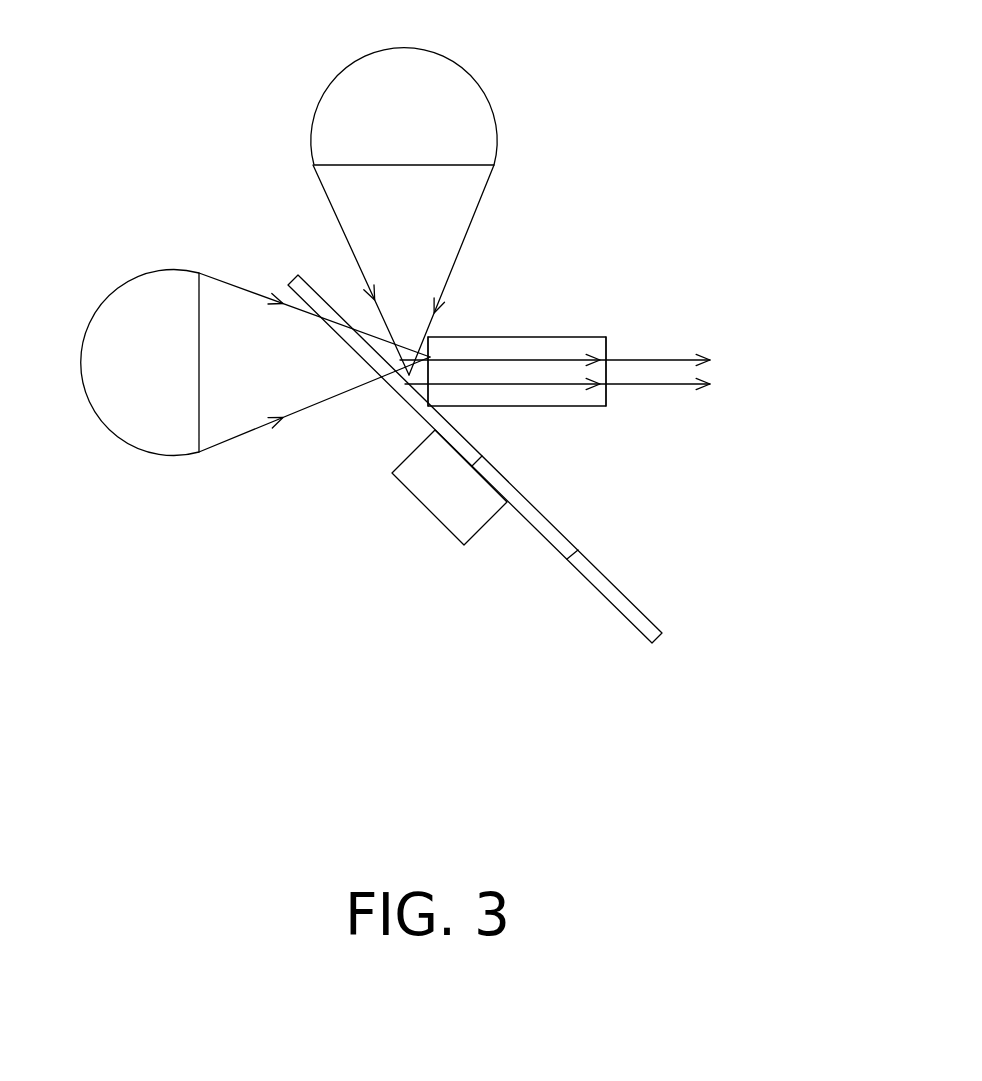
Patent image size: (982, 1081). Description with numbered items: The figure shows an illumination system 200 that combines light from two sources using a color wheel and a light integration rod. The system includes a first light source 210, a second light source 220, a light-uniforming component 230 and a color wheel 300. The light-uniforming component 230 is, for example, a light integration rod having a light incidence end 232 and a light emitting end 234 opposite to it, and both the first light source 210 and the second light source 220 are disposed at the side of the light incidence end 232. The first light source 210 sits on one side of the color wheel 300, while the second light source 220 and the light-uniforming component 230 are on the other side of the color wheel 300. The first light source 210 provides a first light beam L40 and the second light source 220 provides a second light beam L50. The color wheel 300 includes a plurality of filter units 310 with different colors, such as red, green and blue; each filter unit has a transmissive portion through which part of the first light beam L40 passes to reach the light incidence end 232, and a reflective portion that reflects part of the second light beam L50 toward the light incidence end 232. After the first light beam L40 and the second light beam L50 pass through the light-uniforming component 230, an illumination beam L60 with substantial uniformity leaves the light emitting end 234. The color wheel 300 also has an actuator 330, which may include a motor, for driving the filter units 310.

The illumination system 200 is at (852, 715).
The first light source 210 is at (140, 348).
The second light source 220 is at (418, 107).
The light-uniforming component 230 is at (515, 342).
The light incidence end 232 is at (439, 357).
The light emitting end 234 is at (617, 355).
The color wheel 300 is at (448, 469).
The filter units 310 is at (565, 557).
The actuator 330 is at (440, 495).
The first light beam L40 is at (228, 423).
The second light beam L50 is at (343, 193).
The illumination beam L60 is at (645, 384).